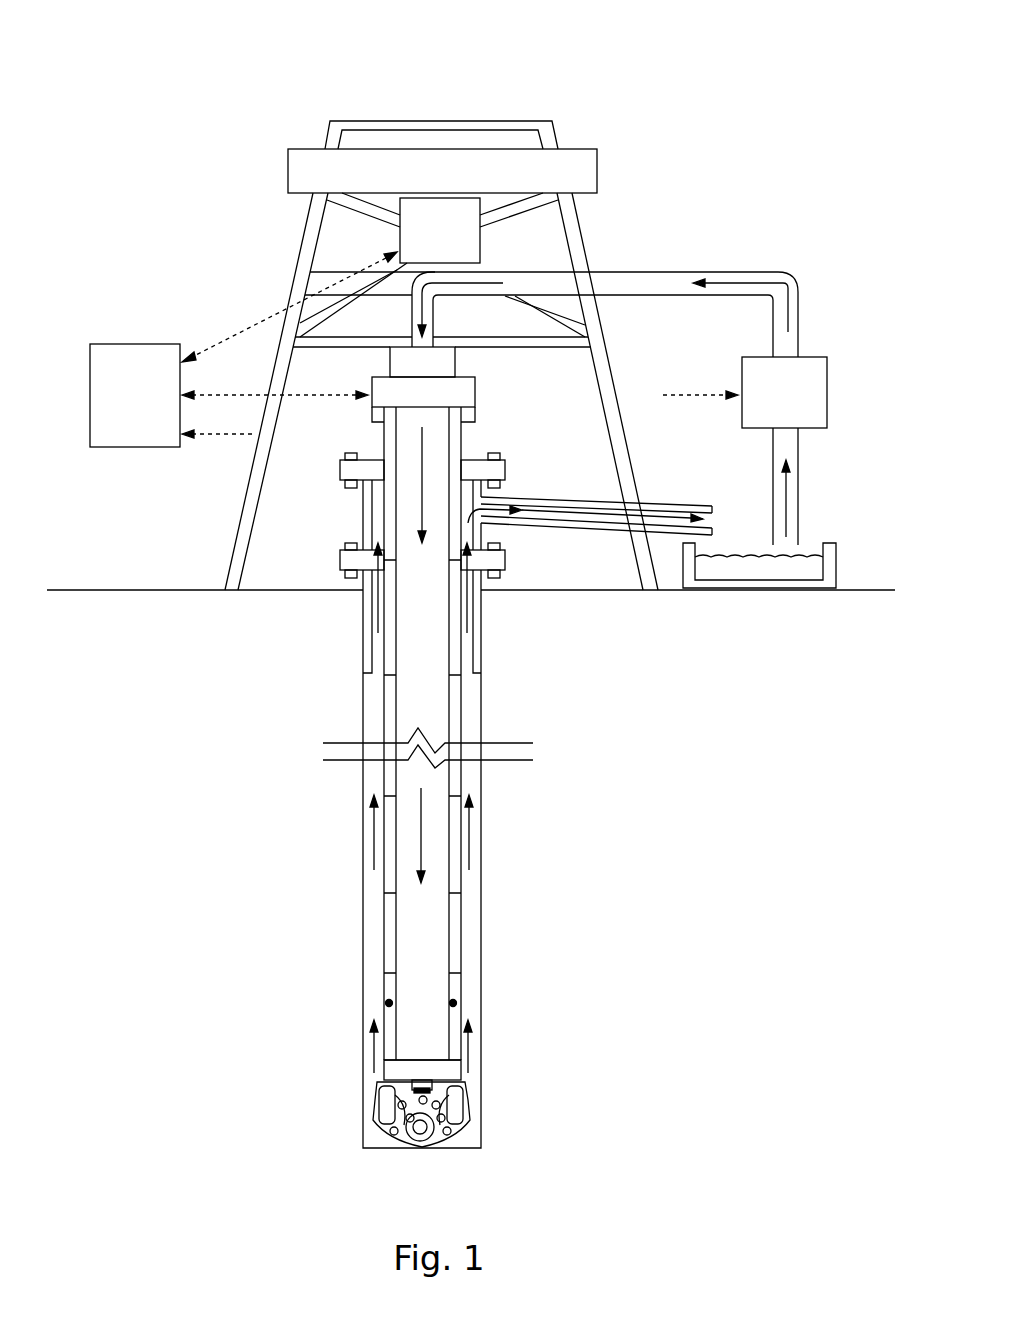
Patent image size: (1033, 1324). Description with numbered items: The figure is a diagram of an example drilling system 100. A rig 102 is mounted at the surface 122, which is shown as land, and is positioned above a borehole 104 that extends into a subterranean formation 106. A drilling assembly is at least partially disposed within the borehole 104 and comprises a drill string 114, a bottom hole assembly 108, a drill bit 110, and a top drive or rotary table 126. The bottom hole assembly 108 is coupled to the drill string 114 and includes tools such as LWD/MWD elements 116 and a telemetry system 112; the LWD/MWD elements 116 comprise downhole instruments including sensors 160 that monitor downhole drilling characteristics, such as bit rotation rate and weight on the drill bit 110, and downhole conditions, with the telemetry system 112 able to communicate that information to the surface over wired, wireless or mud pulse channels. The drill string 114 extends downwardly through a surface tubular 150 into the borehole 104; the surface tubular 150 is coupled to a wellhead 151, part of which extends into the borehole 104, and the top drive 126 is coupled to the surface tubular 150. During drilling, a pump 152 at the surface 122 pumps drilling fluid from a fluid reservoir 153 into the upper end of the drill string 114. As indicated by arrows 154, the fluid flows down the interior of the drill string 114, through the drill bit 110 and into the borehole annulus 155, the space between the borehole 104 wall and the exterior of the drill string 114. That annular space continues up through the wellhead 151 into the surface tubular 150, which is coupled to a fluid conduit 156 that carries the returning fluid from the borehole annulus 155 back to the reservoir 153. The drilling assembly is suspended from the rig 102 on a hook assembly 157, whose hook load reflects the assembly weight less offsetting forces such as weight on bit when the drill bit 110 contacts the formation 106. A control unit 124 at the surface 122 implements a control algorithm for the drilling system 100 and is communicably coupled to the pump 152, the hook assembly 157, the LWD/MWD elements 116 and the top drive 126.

The drilling system 100 is at (722, 55).
The rig 102 is at (296, 273).
The borehole 104 is at (481, 692).
The subterranean formation 106 is at (731, 718).
The bottom hole assembly (BHA) 108 is at (461, 928).
The drill bit 110 is at (467, 1107).
The telemetry system 112 is at (383, 930).
The drill string 114 is at (382, 721).
The LWD/MWD elements 116 is at (363, 1040).
The surface 122 is at (130, 590).
The control unit 124 is at (243, 349).
The top drive or rotary table 126 is at (423, 384).
The surface tubular 150 is at (363, 523).
The wellhead 151 is at (362, 650).
The pump 152 is at (745, 451).
The fluid reservoir 153 is at (837, 567).
The arrows 154 is at (733, 280).
The borehole annulus 155 is at (470, 882).
The fluid conduit 156 is at (658, 505).
The hook assembly 157 is at (440, 230).
The sensors 160 is at (389, 1000).